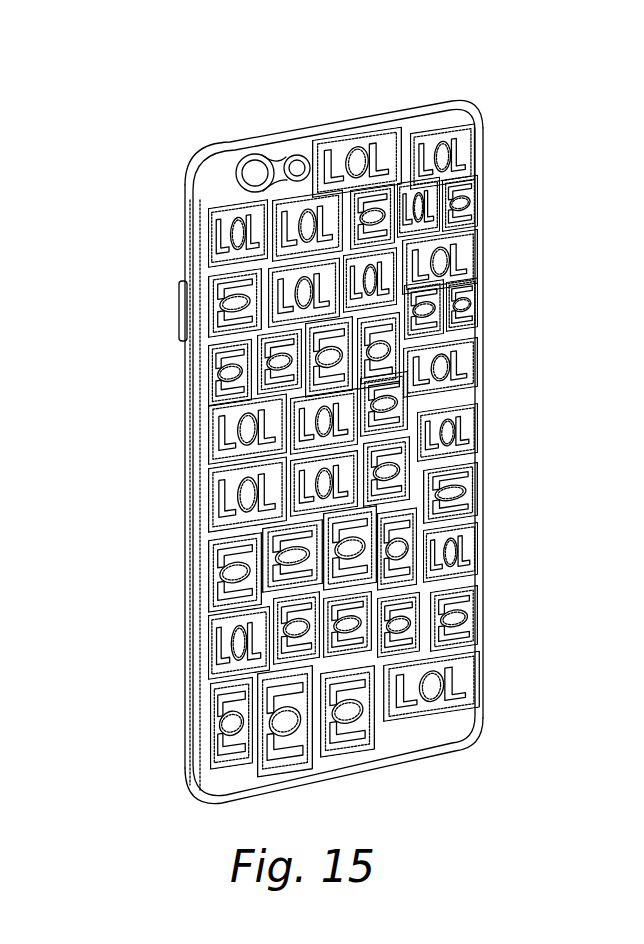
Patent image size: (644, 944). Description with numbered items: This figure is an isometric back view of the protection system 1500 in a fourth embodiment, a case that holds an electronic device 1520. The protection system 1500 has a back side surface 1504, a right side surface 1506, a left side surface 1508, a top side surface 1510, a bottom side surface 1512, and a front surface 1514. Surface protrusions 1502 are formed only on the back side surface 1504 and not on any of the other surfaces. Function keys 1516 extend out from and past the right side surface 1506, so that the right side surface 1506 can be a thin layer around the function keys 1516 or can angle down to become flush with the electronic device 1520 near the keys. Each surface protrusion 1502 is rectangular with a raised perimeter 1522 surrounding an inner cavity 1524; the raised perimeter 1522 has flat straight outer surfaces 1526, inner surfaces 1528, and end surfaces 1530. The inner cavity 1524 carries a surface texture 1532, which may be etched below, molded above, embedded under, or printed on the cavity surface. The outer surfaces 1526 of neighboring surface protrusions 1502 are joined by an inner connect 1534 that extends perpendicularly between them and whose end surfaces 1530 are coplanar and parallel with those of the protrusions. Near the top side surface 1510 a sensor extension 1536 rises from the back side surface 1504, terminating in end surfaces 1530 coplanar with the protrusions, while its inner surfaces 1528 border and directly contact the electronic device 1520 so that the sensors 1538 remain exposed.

The protection system 1500 is at (181, 60).
The surface protrusions 1502 is at (486, 198).
The back side surface 1504 is at (227, 180).
The right side surface 1506 is at (185, 635).
The left side surface 1508 is at (480, 650).
The top side surface 1510 is at (393, 103).
The bottom side surface 1512 is at (383, 765).
The front surface 1514 is at (185, 525).
The function keys 1516 is at (180, 307).
The electronic device 1520 is at (283, 166).
The raised perimeter 1522 is at (480, 360).
The inner cavity 1524 is at (468, 388).
The outer surfaces 1526 is at (208, 340).
The inner surfaces 1528 is at (287, 420).
The end surfaces 1530 is at (210, 257).
The surface texture 1532 is at (450, 682).
The inner connect 1534 is at (213, 680).
The sensor extension 1536 is at (338, 112).
The sensors 1538 is at (258, 168).